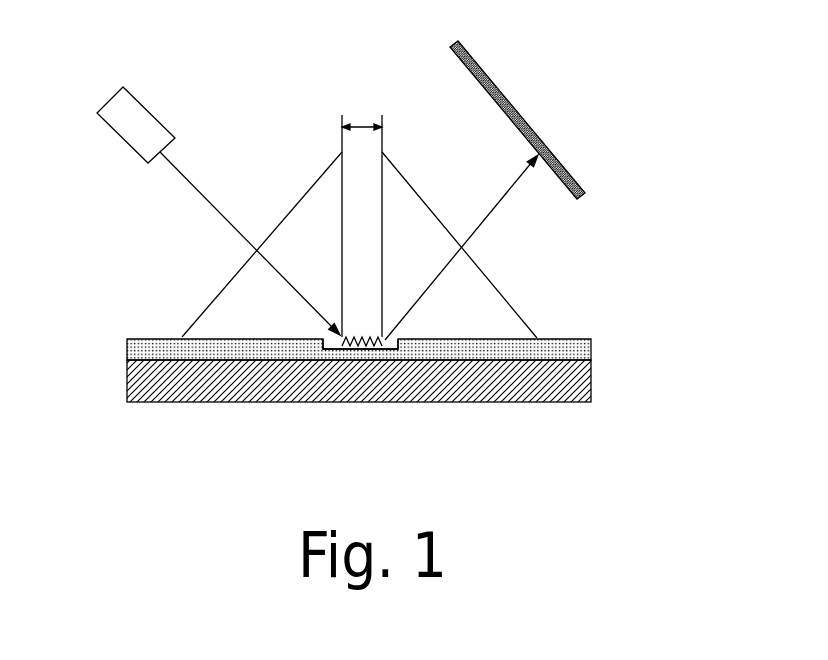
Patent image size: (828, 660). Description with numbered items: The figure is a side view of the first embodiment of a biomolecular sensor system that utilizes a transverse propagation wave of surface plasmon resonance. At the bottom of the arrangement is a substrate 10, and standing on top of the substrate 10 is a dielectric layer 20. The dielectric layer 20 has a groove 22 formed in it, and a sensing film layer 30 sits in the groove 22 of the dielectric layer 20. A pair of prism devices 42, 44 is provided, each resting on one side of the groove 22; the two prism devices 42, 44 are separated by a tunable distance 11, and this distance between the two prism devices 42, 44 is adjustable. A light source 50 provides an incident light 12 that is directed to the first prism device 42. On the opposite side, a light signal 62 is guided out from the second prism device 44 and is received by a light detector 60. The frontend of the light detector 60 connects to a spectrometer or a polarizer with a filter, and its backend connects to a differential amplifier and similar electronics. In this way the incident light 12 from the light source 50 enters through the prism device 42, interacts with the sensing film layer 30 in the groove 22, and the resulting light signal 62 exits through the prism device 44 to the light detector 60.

The substrate 10 is at (592, 383).
The dielectric layer 20 is at (592, 350).
The groove 22 is at (389, 343).
The sensing film layer 30 is at (362, 349).
The light source 50 is at (143, 117).
The incident light 12 is at (227, 218).
The prism device 42 is at (298, 218).
The prism device 44 is at (423, 217).
The tunable distance 11 is at (360, 127).
The light detector 60 is at (527, 117).
The light signal 62 is at (490, 210).